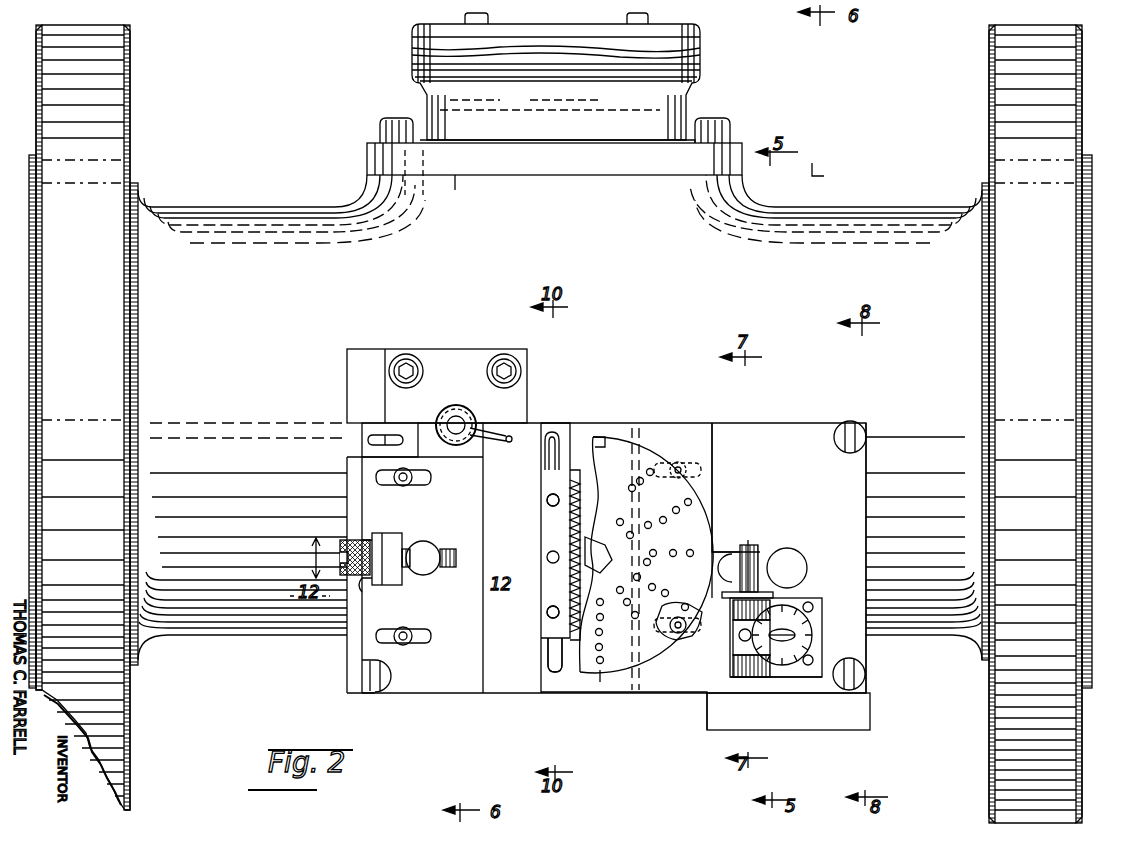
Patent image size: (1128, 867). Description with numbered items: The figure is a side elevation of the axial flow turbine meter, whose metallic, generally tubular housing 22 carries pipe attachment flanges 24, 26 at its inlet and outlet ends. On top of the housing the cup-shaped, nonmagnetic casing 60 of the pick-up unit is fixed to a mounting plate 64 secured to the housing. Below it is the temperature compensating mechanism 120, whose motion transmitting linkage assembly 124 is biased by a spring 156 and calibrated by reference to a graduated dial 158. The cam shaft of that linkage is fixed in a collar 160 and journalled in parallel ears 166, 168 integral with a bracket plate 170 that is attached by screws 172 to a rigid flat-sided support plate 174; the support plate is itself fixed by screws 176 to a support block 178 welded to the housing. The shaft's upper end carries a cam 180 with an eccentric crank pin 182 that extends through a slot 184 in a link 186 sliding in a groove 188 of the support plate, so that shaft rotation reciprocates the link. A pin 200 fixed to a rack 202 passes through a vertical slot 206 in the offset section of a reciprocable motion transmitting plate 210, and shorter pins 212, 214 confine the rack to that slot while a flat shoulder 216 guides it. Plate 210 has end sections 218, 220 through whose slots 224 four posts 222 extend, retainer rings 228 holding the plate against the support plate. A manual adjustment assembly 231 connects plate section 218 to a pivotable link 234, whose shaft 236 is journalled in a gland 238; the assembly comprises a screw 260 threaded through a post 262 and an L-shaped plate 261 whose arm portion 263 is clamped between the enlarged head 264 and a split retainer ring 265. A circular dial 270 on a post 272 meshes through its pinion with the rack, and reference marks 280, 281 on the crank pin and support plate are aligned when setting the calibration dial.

The housing 22 is at (880, 207).
The pipe attachment flange 24 is at (122, 50).
The pipe attachment flange 26 is at (1082, 50).
The casing 60 is at (700, 58).
The mounting plate 64 is at (746, 143).
The temperature compensating mechanism 120 is at (668, 422).
The motion transmitting linkage assembly 124 is at (724, 548).
The spring 156 is at (455, 406).
The dial 158 is at (800, 608).
The collar 160 is at (712, 662).
The ear 166 is at (712, 690).
The ear 168 is at (705, 618).
The bracket plate 170 is at (790, 678).
The screw 172 is at (834, 641).
The support plate 174 is at (866, 457).
The screw 176 is at (862, 432).
The support block 178 is at (347, 372).
The cam 180 is at (730, 600).
The eccentric crank pin 182 is at (778, 592).
The slot 184 is at (763, 550).
The link 186 is at (720, 548).
The groove 188 is at (806, 572).
The pin 200 is at (546, 556).
The rack 202 is at (578, 465).
The slot 206 is at (551, 432).
The motion transmitting plate 210 is at (713, 423).
The pin 212 is at (546, 612).
The pin 214 is at (546, 500).
The shoulder 216 is at (546, 692).
The plate end section 218 is at (350, 668).
The plate end section 220 is at (716, 459).
The post 222 is at (395, 481).
The slot 224 is at (427, 482).
The retainer ring 228 is at (395, 473).
The manual adjustment assembly 231 is at (338, 547).
The pivotable link 234 is at (476, 425).
The shaft 236 is at (462, 408).
The gland 238 is at (504, 352).
The screw 260 is at (450, 549).
The L-shaped motion transmitting plate 261 is at (346, 548).
The post 262 is at (430, 571).
The arm portion 263 is at (378, 534).
The enlarged head 264 is at (350, 540).
The split retainer ring 265 is at (405, 549).
The dial 270 is at (612, 455).
The post 272 is at (606, 550).
The reference mark 280 is at (730, 556).
The reference mark 281 is at (752, 545).